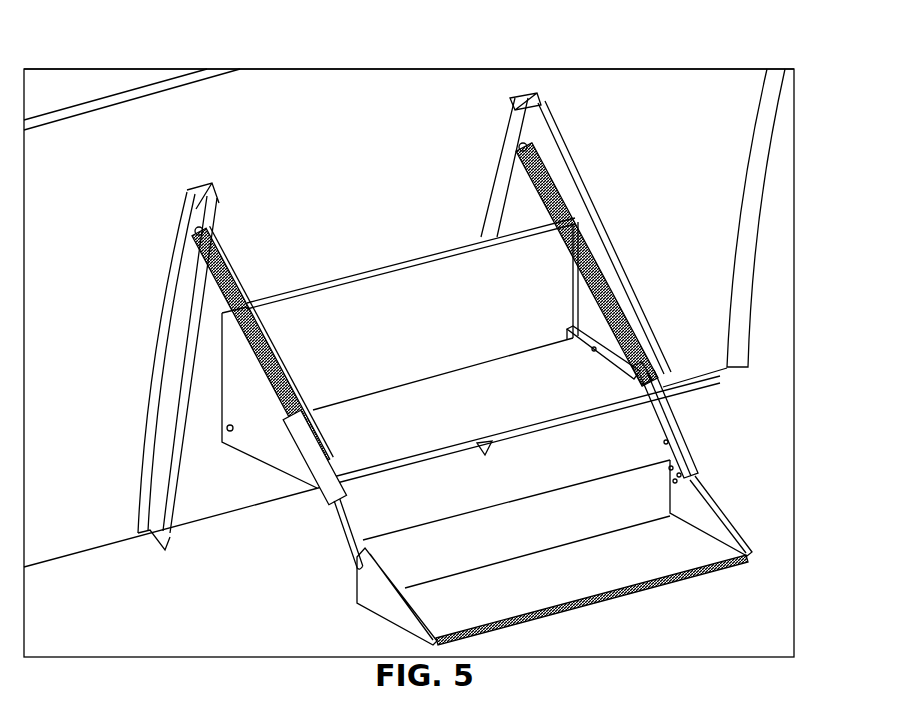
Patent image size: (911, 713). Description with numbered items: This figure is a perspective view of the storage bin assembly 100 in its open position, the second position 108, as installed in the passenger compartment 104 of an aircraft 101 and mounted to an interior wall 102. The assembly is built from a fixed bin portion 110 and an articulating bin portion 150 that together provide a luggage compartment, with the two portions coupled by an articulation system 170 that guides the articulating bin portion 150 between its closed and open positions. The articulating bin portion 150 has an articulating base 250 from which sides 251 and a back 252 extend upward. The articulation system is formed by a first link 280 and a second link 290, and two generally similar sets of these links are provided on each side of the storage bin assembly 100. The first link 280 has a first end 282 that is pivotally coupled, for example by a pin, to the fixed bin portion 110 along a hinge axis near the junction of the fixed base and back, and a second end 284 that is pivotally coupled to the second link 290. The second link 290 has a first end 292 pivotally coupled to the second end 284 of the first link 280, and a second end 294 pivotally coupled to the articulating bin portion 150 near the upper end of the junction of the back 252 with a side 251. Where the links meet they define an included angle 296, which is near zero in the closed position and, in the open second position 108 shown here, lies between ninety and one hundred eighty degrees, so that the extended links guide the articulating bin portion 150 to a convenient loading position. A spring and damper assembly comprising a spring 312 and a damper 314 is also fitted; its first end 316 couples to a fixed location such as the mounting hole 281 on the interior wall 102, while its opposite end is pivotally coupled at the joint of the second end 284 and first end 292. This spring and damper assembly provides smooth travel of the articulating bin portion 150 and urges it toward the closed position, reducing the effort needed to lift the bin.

The storage bin assembly 100 is at (684, 31).
The aircraft 101 is at (121, 76).
The interior wall 102 is at (300, 96).
The passenger compartment 104 is at (285, 52).
The second position 108 is at (286, 630).
The fixed bin portion 110 is at (390, 447).
The articulating bin portion 150 is at (483, 627).
The articulation system 170 is at (325, 520).
The articulating base 250 is at (612, 571).
The sides 251 is at (392, 600).
The back 252 is at (400, 530).
The first link 280 is at (617, 335).
The mounting hole 281 is at (517, 143).
The first end 282 is at (571, 352).
The second end 284 is at (621, 380).
The second link 290 is at (662, 428).
The first end 292 is at (625, 420).
The second end 294 is at (705, 458).
The included angle 296 is at (654, 446).
The spring 312 is at (553, 180).
The damper 314 is at (733, 240).
The first end 316 is at (553, 133).